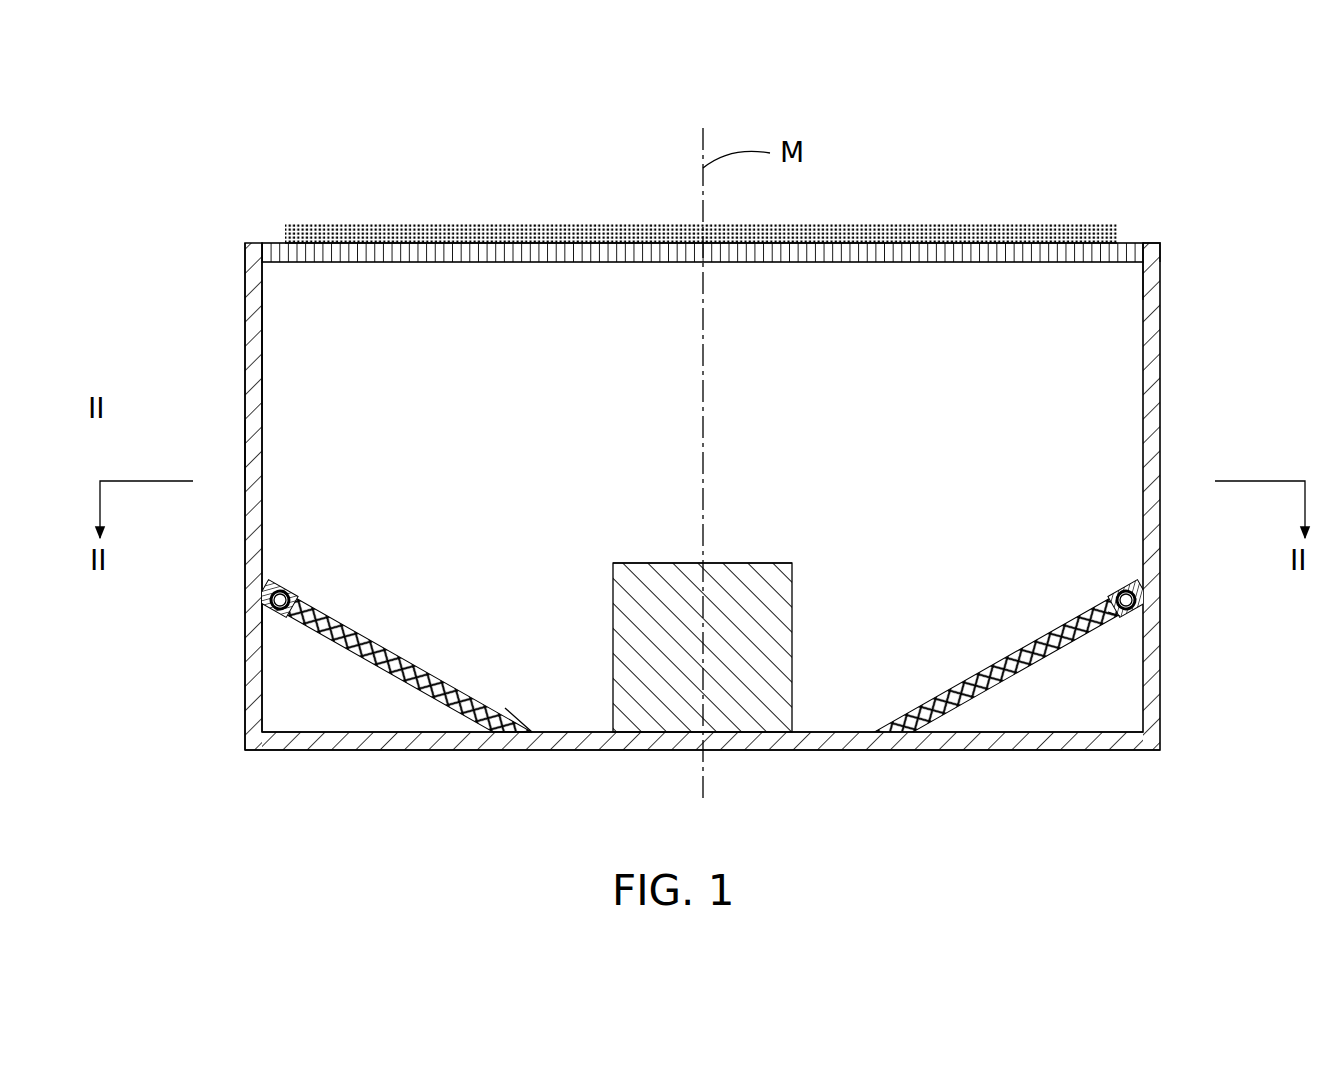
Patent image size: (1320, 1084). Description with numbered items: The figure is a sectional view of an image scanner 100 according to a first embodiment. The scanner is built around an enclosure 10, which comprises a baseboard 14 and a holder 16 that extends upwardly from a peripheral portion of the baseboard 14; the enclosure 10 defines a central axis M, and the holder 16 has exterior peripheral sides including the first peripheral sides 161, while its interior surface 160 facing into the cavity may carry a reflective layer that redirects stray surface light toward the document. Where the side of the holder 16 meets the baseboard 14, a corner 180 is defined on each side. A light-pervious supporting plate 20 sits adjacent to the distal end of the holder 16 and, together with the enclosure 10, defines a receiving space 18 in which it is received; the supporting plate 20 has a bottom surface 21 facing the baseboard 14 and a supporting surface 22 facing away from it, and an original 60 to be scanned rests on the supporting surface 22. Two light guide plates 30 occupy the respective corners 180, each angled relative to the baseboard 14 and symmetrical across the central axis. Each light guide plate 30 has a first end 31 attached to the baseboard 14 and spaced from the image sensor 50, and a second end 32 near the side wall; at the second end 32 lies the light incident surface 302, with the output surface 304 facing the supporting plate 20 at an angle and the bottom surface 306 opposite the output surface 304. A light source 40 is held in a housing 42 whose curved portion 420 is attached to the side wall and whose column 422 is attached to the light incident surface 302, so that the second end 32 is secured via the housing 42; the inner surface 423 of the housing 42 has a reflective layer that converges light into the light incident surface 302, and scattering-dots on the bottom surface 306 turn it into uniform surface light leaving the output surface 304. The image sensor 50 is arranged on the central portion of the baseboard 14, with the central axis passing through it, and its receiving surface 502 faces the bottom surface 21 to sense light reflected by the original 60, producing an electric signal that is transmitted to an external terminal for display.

The image scanner 100 is at (545, 128).
The enclosure 10 is at (232, 527).
The baseboard 14 is at (775, 740).
The holder 16 is at (255, 296).
The interior surface 160 is at (264, 325).
The first peripheral side 161 is at (275, 447).
The receiving space 18 is at (394, 285).
The corner 180 is at (272, 622).
The light-pervious supporting plate 20 is at (945, 256).
The bottom surface 21 is at (1135, 264).
The supporting surface 22 is at (1135, 243).
The original 60 is at (805, 235).
The image sensor 50 is at (792, 563).
The receiving surface 502 is at (733, 560).
The light guide plate 30 is at (379, 720).
The first end 31 is at (410, 674).
The second end 32 is at (277, 599).
The light incident surface 302 is at (286, 590).
The output surface 304 is at (510, 708).
The bottom surface 306 is at (471, 736).
The housing 42 is at (1083, 653).
The light source 40 is at (995, 674).
The curved portion 420 is at (1140, 588).
The column 422 is at (1117, 607).
The inner surface 423 is at (1113, 615).